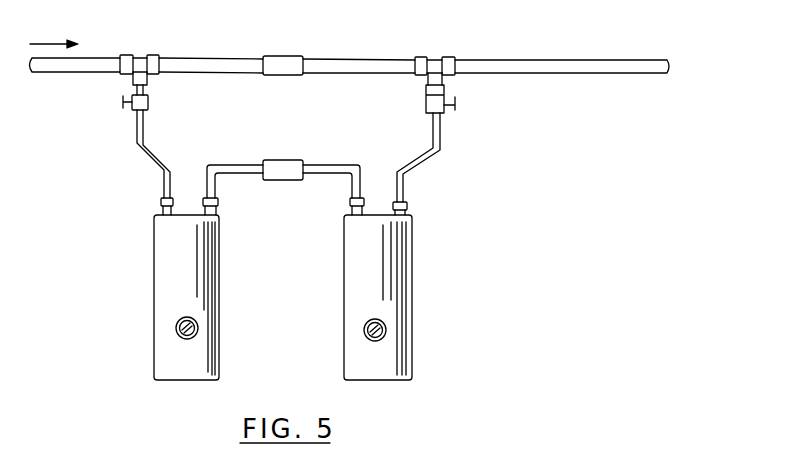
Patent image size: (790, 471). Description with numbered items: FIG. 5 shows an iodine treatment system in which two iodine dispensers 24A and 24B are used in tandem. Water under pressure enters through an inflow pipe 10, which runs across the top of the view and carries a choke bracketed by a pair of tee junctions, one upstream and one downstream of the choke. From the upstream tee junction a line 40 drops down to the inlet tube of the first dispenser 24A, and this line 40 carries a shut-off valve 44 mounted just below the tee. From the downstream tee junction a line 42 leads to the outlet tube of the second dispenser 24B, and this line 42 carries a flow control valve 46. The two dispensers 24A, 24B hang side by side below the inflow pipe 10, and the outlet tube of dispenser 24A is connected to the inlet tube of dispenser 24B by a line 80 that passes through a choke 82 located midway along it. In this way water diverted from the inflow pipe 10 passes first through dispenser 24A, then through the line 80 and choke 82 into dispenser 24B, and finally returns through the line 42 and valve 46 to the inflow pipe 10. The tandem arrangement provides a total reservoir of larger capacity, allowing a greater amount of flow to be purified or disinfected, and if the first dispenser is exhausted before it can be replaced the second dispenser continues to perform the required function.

The inflow pipe 10 is at (205, 58).
The shut-off valve 44 is at (122, 100).
The flow control valve 46 is at (455, 105).
The line 40 is at (137, 135).
The line 42 is at (418, 167).
The line 80 is at (328, 165).
The choke 82 is at (276, 160).
The dispenser 24A is at (154, 258).
The dispenser 24B is at (412, 312).